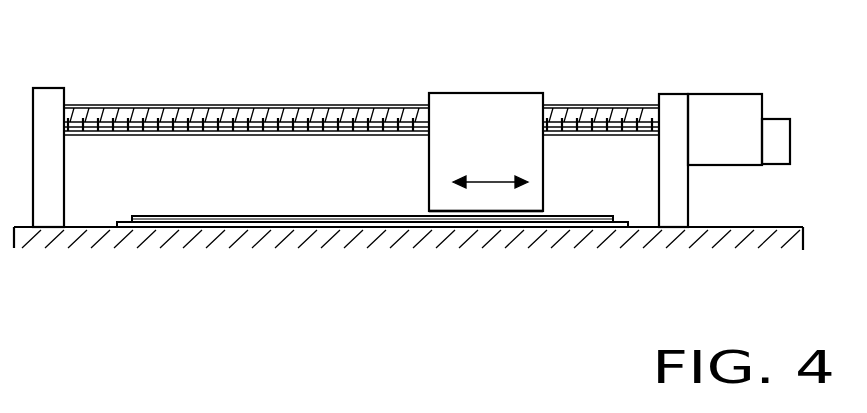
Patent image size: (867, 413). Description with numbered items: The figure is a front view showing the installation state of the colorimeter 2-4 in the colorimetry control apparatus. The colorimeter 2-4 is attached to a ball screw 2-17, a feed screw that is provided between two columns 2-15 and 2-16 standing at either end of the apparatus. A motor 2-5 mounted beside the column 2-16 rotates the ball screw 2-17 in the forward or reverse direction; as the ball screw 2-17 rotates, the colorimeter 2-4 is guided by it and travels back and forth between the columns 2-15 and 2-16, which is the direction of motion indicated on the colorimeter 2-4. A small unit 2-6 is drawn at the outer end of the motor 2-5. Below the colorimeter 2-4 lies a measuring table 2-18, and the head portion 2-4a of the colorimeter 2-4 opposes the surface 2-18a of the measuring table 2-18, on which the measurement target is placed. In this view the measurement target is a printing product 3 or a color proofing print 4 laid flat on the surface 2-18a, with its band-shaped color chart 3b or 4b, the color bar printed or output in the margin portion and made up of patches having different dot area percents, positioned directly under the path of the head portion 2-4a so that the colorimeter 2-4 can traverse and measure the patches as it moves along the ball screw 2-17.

The column 2-15 is at (48, 93).
The column 2-16 is at (675, 98).
The ball screw 2-17 is at (308, 107).
The colorimeter 2-4 is at (508, 91).
The head portion 2-4a is at (440, 213).
The motor 2-5 is at (740, 95).
The encoder 2-6 is at (793, 137).
The measuring table 2-18 is at (777, 228).
The surface 2-18a is at (100, 228).
The color chart 3b is at (387, 184).
The color chart 4b is at (560, 218).
The printing product 3 is at (377, 280).
The color proofing print 4 is at (600, 229).